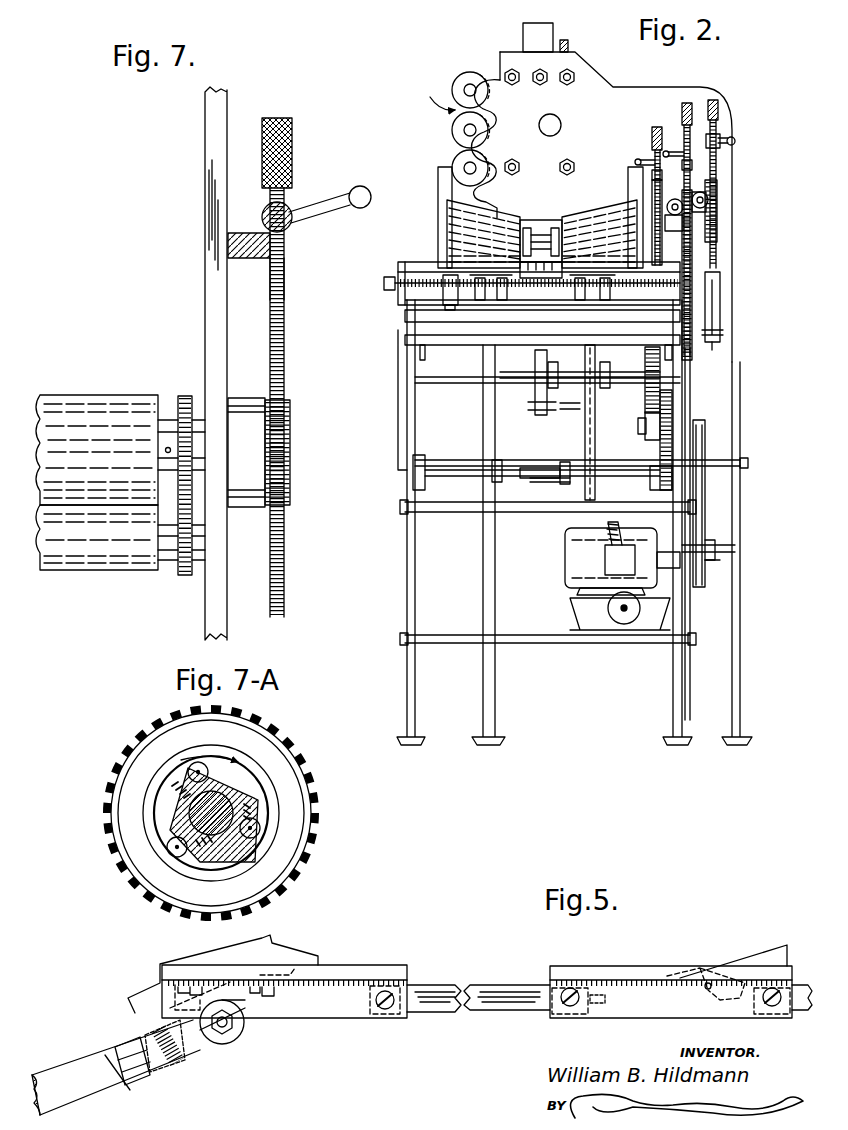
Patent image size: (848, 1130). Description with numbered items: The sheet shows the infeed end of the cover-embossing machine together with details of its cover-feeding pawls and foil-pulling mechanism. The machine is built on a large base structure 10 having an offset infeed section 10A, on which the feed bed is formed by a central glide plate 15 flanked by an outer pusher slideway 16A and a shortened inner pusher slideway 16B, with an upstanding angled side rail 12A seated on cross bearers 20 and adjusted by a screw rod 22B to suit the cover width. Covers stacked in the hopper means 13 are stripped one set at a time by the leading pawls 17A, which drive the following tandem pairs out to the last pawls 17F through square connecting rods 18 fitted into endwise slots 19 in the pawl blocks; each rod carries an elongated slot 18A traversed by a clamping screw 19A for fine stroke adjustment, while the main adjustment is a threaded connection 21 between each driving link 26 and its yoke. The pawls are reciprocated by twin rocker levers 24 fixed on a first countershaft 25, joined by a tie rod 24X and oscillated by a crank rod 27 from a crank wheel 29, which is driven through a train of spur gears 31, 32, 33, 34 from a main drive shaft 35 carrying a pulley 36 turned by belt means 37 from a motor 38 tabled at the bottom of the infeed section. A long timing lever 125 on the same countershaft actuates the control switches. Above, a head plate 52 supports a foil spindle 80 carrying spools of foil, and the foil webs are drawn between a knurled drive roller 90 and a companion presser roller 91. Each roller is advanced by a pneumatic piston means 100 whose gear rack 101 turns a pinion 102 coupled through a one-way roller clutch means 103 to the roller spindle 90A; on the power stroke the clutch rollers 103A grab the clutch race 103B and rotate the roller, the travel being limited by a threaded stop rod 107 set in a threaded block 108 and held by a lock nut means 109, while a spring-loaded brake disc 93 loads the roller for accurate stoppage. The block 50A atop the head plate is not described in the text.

In FIG. 2, the base structure 10 is at (490, 708).
In FIG. 2, the offset infeed section 10A is at (418, 615).
In FIG. 2, the angled side rail 12A is at (445, 272).
In FIG. 2, the cover-stacking hopper means 13 is at (590, 200).
In FIG. 2, the glide plate 15 is at (555, 278).
In FIG. 2, the outer pusher slideway 16A is at (487, 285).
In FIG. 2, the inner pusher slideway 16B is at (588, 285).
In FIG. 5, the leading infeed pawls 17A is at (300, 947).
In FIG. 5, the last pair of pawls 17F is at (730, 950).
In FIG. 5, the connecting rod 18 is at (496, 985).
In FIG. 5, the elongated slot 18A is at (590, 1006).
In FIG. 5, the endwise slot 19 is at (410, 983).
In FIG. 5, the clamping screw 19A is at (568, 1012).
In FIG. 2, the cross bearers 20 is at (398, 300).
In FIG. 5, the threaded connection 21 is at (188, 1062).
In FIG. 2, the adjusting screw rod 22B is at (384, 284).
In FIG. 2, the twin rocker levers 24 is at (590, 448).
In FIG. 2, the tie rod 24X is at (578, 398).
In FIG. 2, the first countershaft 25 is at (522, 478).
In FIG. 5, the driving link 26 is at (88, 1098).
In FIG. 2, the crank rod 27 is at (532, 412).
In FIG. 2, the crank wheel 29 is at (535, 392).
In FIG. 2, the spur gear 31 is at (645, 382).
In FIG. 2, the spur gear 32 is at (645, 428).
In FIG. 2, the spur gear 33 is at (660, 447).
In FIG. 2, the spur gear 34 is at (655, 480).
In FIG. 2, the main drive shaft 35 is at (560, 480).
In FIG. 2, the pulley 36 is at (712, 470).
In FIG. 2, the belt means 37 is at (710, 530).
In FIG. 2, the motor 38 is at (566, 560).
In FIG. 2, the block 50A is at (555, 37).
In FIG. 7, the head plate 52 is at (208, 122).
In FIG. 2, the head plate 52 is at (628, 100).
In FIG. 2, the foil spindle 80 is at (462, 130).
In FIG. 7, the knurled drive roller 90 is at (105, 396).
In FIG. 7, the feed roller spindle 90A is at (28, 425).
In FIG. 7A, the feed roller spindle 90A is at (238, 808).
In FIG. 7, the presser roller 91 is at (128, 572).
In FIG. 7, the spring-loaded brake disc 93 is at (185, 393).
In FIG. 2, the pneumatic piston means 100 is at (718, 295).
In FIG. 7, the gear rack 101 is at (286, 380).
In FIG. 2, the gear rack 101 is at (718, 228).
In FIG. 7, the pinion 102 is at (286, 437).
In FIG. 7A, the pinion 102 is at (288, 745).
In FIG. 7, the one-way roller clutch means 103 is at (249, 400).
In FIG. 7A, the one-way roller clutch means 103 is at (132, 780).
In FIG. 2, the one-way roller clutch means 103 is at (722, 213).
In FIG. 7A, the clutch rollers 103A is at (262, 826).
In FIG. 7A, the clutch race 103B is at (275, 842).
In FIG. 7, the threaded stop rod 107 is at (286, 283).
In FIG. 2, the threaded stop rod 107 is at (718, 176).
In FIG. 7, the threaded block 108 is at (243, 255).
In FIG. 2, the threaded block 108 is at (720, 150).
In FIG. 7, the lock nut means 109 is at (362, 186).
In FIG. 2, the lock nut means 109 is at (732, 138).
In FIG. 2, the timing lever 125 is at (692, 410).